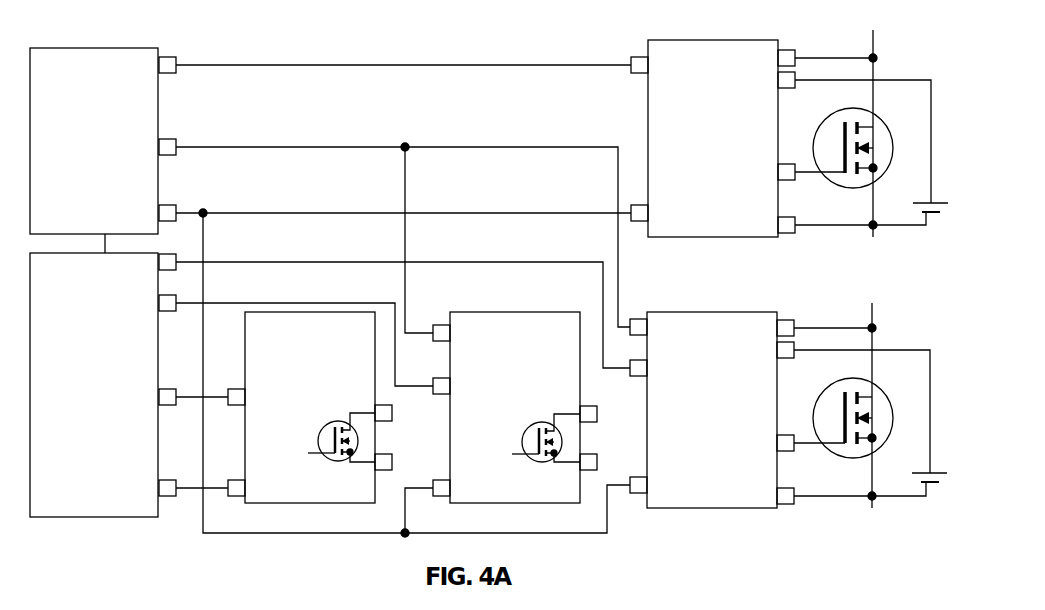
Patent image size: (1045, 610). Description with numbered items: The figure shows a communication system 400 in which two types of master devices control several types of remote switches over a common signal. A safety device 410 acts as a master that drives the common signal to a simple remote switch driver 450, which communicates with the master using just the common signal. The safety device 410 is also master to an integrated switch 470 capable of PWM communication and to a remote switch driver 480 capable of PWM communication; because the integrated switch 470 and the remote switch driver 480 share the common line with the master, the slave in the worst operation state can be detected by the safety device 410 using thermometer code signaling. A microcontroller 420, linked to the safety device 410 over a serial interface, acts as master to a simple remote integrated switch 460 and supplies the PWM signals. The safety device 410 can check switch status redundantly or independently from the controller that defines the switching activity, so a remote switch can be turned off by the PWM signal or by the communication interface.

The communication system 400 is at (346, 43).
The safety device 410 is at (110, 225).
The microcontroller 420 is at (110, 506).
The simple remote switch driver 450 is at (730, 226).
The simple remote integrated switch 460 is at (326, 493).
The integrated switch 470 is at (533, 494).
The remote switch driver 480 is at (728, 498).